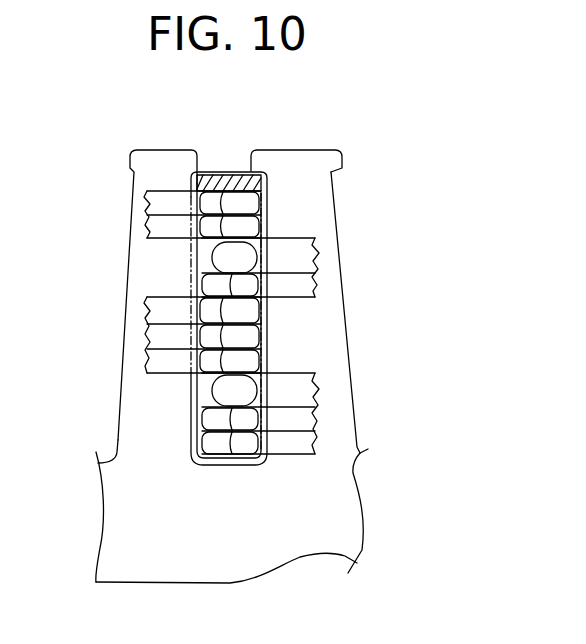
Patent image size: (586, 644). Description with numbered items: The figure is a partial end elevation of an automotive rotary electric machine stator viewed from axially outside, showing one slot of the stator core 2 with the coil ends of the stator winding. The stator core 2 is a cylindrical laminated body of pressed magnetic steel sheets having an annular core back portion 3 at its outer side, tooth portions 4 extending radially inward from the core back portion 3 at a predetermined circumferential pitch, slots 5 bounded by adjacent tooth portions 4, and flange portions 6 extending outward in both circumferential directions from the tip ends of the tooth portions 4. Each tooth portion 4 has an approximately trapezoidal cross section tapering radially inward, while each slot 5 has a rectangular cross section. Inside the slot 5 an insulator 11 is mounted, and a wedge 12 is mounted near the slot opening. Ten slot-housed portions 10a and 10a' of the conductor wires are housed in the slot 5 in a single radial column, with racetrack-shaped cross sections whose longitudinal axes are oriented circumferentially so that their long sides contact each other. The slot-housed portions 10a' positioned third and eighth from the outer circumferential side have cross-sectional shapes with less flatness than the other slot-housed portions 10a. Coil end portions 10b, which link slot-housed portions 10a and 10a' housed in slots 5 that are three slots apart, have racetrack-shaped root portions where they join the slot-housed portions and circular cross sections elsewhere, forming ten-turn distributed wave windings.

The stator core 2 is at (124, 155).
The core back portion 3 is at (147, 525).
The tooth portion 4 is at (328, 322).
The slot 5 is at (204, 428).
The flange portion 6 is at (325, 152).
The slot-housed portion 10a is at (323, 299).
The slot-housed portion 10a' is at (147, 302).
The coil end portion 10b is at (305, 286).
The insulator 11 is at (190, 272).
The wedge 12 is at (222, 174).